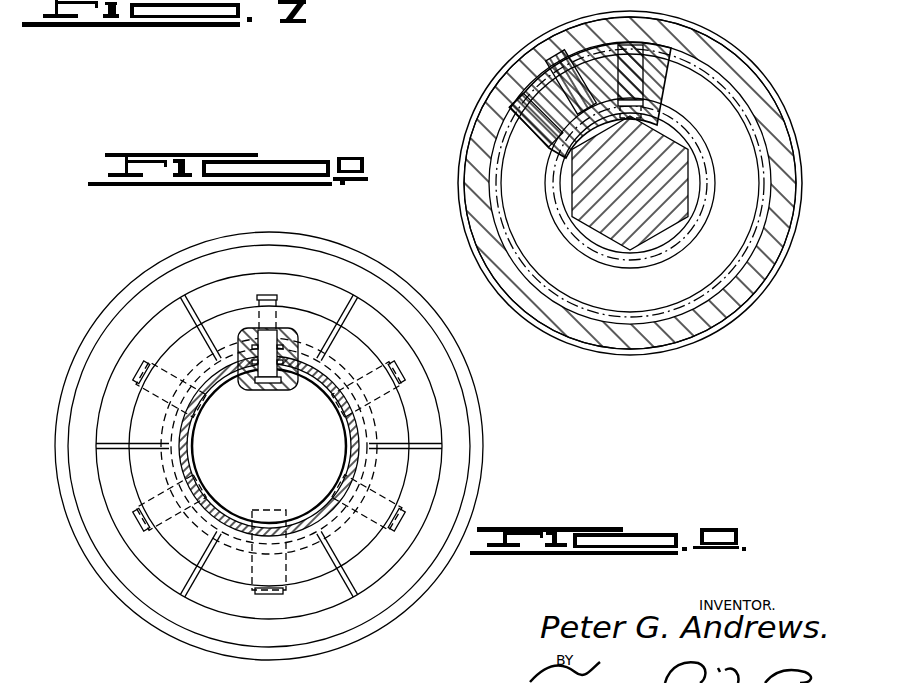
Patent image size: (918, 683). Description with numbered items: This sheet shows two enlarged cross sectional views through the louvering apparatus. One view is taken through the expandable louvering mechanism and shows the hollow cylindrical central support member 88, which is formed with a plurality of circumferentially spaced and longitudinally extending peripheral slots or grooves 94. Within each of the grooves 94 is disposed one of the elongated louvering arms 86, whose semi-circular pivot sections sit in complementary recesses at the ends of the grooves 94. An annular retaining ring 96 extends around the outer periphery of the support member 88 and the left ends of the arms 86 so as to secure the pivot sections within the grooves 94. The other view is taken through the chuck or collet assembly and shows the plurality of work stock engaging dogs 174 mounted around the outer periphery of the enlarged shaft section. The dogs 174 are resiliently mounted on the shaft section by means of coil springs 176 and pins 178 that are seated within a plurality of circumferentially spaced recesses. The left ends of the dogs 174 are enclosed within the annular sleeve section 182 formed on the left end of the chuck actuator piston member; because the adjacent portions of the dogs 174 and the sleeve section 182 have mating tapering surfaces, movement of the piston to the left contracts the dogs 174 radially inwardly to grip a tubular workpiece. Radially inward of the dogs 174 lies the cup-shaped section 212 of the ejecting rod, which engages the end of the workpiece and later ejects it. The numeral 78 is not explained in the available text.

In FIG. 8, the annular sleeve section 182 is at (170, 278).
In FIG. 8, the work stock engaging dogs 174 is at (384, 310).
In FIG. 8, the coil springs 176 is at (290, 349).
In FIG. 8, the pins 178 is at (211, 412).
In FIG. 8, the cup-shaped section 212 is at (306, 510).
In FIG. 9, the louvering arms 86 is at (617, 41).
In FIG. 9, the central support member 88 is at (669, 49).
In FIG. 9, the peripheral slots or grooves 94 is at (583, 92).
In FIG. 9, the nut 78 is at (609, 237).
In FIG. 9, the annular retaining ring 96 is at (649, 355).